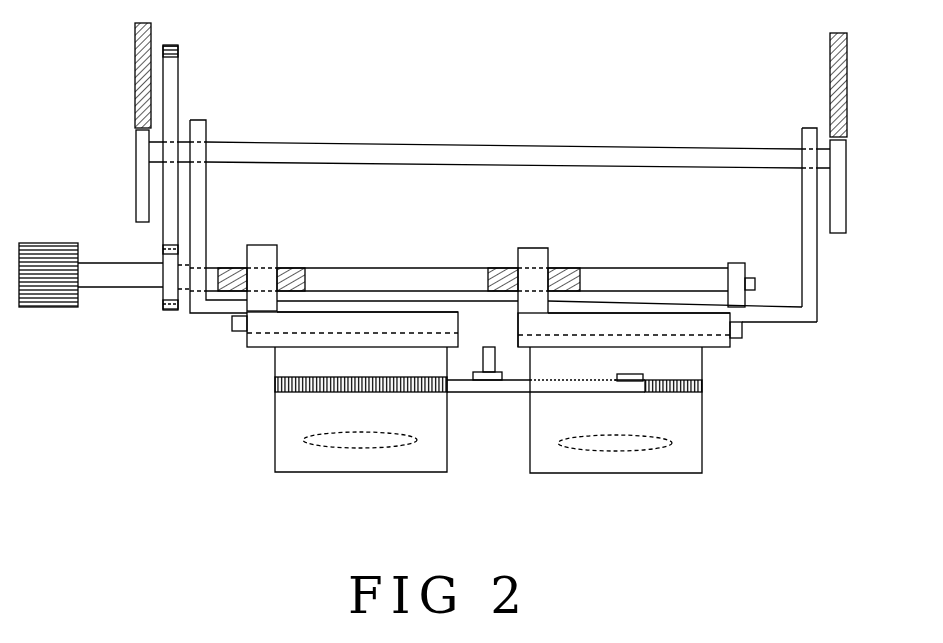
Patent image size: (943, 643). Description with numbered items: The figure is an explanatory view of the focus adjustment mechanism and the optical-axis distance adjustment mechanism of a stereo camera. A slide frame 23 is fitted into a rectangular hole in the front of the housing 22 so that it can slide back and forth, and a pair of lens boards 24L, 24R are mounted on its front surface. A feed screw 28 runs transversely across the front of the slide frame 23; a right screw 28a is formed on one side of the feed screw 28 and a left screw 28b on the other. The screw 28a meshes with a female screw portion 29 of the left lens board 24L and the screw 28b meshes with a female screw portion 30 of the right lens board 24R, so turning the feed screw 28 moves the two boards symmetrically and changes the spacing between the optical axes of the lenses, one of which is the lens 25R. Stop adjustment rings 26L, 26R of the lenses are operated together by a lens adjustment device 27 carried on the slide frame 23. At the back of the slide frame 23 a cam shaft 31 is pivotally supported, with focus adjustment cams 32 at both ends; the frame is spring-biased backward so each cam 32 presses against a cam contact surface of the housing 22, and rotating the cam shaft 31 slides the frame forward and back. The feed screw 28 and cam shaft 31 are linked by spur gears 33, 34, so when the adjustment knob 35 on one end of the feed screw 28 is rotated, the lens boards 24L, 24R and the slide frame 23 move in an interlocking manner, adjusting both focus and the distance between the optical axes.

The housing 22 is at (135, 70).
The slide frame 23 is at (800, 212).
The right lens board 24R is at (258, 347).
The left lens board 24L is at (720, 350).
The right lens 25R is at (365, 448).
The right stop adjustment ring 26R is at (276, 386).
The left stop adjustment ring 26L is at (703, 384).
The lens adjustment device 27 is at (487, 396).
The feed screw 28 is at (392, 267).
The right screw 28a is at (501, 266).
The left screw 28b is at (240, 266).
The female screw portion 29 is at (540, 248).
The female screw portion 30 is at (266, 245).
The cam shaft 31 is at (441, 141).
The cam 32 is at (136, 160).
The spur gear 33 is at (165, 310).
The spur gear 34 is at (163, 229).
The adjustment knob 35 is at (48, 308).